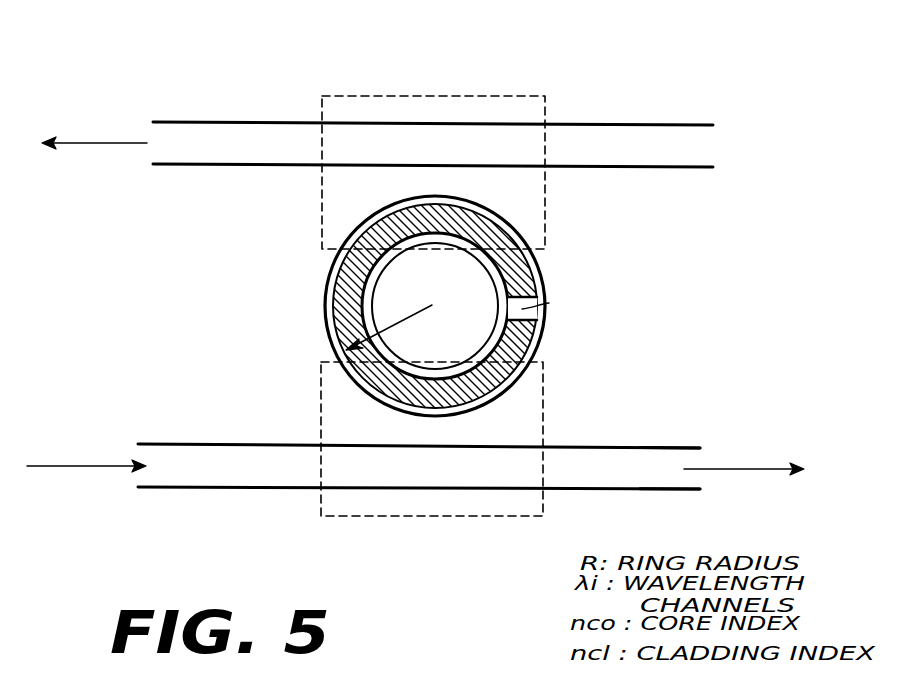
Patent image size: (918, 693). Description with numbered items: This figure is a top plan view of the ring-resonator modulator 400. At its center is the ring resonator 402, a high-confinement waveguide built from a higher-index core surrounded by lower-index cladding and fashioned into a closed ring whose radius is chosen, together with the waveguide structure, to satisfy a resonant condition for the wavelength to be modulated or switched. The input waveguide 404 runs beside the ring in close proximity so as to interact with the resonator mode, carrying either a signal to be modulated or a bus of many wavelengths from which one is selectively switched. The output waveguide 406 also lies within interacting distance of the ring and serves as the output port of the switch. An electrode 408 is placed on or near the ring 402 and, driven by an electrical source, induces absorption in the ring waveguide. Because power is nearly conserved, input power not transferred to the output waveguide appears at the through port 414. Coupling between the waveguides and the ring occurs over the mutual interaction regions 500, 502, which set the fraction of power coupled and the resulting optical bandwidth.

The modulator 400 is at (748, 277).
The ring resonator 402 is at (330, 323).
The input waveguide 404 is at (278, 470).
The output waveguide 406 is at (211, 145).
The electrode 408 is at (512, 287).
The through port 414 is at (790, 444).
The interaction region 500 is at (432, 106).
The interaction region 502 is at (358, 502).